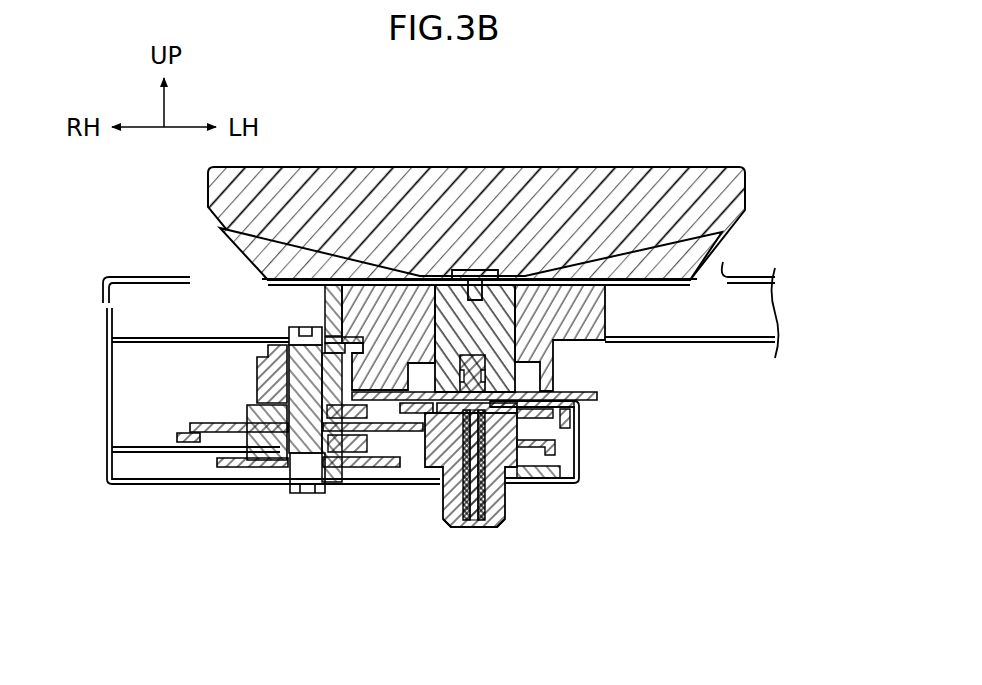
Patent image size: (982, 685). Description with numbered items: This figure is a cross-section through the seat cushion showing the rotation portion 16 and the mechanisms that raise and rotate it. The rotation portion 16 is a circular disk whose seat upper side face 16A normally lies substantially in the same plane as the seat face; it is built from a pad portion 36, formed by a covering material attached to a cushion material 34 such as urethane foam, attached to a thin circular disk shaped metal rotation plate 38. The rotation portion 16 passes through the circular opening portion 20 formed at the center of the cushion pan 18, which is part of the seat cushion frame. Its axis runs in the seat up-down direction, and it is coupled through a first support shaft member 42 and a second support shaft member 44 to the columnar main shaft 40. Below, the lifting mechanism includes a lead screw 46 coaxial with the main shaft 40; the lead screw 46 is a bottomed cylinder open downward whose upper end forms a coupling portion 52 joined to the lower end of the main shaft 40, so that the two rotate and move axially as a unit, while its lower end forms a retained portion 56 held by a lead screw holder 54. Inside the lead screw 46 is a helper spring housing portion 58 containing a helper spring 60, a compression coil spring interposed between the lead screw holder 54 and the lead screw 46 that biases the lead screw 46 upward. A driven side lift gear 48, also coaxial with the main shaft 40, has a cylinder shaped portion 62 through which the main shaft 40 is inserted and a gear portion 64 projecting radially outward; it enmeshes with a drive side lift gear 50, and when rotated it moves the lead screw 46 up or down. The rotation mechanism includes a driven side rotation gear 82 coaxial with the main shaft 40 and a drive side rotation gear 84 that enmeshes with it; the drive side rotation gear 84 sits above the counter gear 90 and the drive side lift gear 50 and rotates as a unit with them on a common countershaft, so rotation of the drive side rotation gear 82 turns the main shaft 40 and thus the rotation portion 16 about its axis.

The rotation portion 16 is at (497, 160).
The seat upper side face 16A is at (622, 166).
The cushion material 34 is at (372, 182).
The pad portion 36 is at (471, 180).
The cushion pan 18 is at (127, 276).
The opening portion 20 is at (728, 277).
The rotation plate 38 is at (268, 292).
The main shaft 40 is at (520, 333).
The first support shaft member 42 is at (643, 302).
The second support shaft member 44 is at (545, 345).
The lead screw 46 is at (578, 486).
The driven side lift gear 48 is at (534, 427).
The drive side lift gear 50 is at (210, 423).
The coupling portion 52 is at (577, 403).
The lead screw holder 54 is at (450, 518).
The retained portion 56 is at (508, 490).
The helper spring housing portion 58 is at (488, 515).
The helper spring 60 is at (475, 540).
The cylinder shaped portion 62 is at (555, 450).
The gear portion 64 is at (418, 485).
The driven side rotation gear 82 is at (597, 397).
The drive side rotation gear 84 is at (257, 358).
The counter gear 90 is at (252, 476).